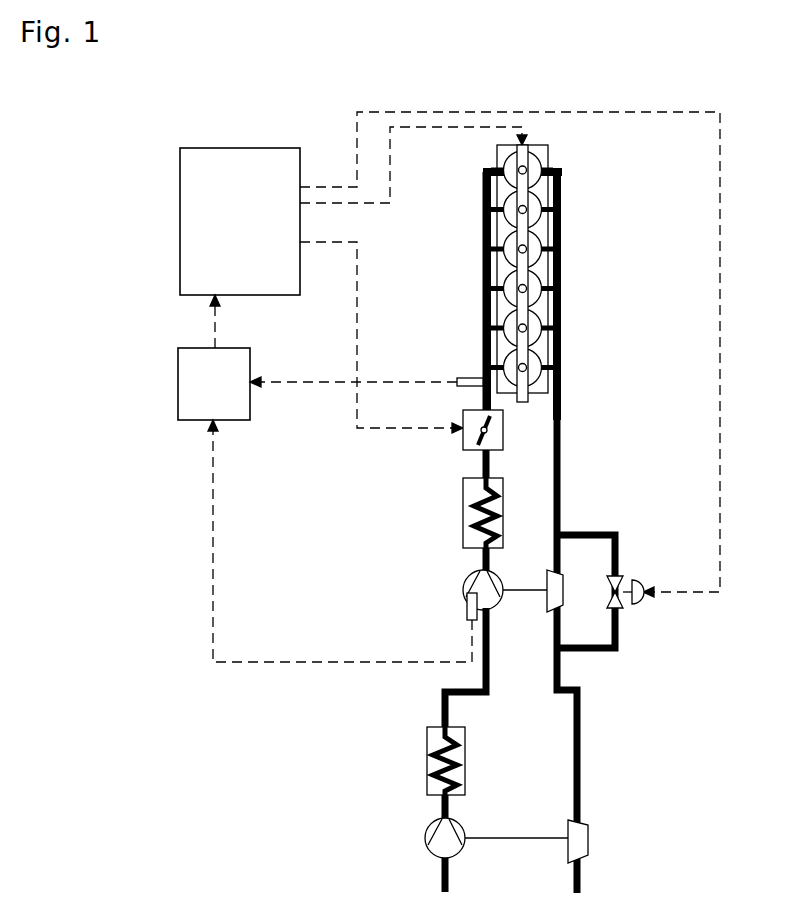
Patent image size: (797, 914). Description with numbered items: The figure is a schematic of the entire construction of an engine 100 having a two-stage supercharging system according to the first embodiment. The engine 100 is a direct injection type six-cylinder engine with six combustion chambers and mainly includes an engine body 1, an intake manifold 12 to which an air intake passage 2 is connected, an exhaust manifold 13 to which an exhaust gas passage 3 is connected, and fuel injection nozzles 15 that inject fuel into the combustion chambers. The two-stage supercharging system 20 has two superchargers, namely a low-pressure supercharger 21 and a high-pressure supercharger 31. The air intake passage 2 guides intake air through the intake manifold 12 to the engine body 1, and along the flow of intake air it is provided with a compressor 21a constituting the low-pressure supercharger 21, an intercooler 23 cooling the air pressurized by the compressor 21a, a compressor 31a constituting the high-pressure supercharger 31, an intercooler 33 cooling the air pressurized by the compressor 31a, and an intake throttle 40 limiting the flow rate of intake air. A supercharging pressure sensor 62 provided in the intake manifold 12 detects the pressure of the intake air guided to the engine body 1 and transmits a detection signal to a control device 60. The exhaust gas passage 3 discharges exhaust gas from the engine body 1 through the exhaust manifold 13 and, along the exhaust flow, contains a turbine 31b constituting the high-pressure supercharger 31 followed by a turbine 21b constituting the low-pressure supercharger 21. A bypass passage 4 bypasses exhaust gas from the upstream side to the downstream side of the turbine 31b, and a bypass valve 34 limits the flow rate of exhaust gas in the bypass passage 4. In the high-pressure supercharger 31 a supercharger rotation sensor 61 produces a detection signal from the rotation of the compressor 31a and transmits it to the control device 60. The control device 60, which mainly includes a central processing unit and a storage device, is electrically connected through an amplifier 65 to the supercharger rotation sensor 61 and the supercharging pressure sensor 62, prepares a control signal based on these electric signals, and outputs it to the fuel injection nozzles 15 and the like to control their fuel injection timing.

The engine 100 is at (741, 39).
The engine body 1 is at (522, 279).
The intake manifold 12 is at (468, 270).
The exhaust manifold 13 is at (572, 271).
The fuel injection nozzles 15 is at (528, 168).
The air intake passage 2 is at (468, 396).
The exhaust gas passage 3 is at (565, 398).
The bypass passage 4 is at (621, 551).
The bypass valve 34 is at (645, 604).
The intake throttle 40 is at (463, 441).
The intercooler 33 is at (463, 514).
The high-pressure supercharger 31 is at (492, 606).
The compressor 31a is at (463, 592).
The turbine 31b is at (565, 610).
The supercharger rotation sensor 61 is at (467, 622).
The supercharging pressure sensor 62 is at (467, 377).
The control device 60 is at (228, 239).
The amplifier 65 is at (205, 400).
The two-stage supercharging system 20 is at (531, 750).
The low-pressure supercharger 21 is at (475, 841).
The compressor 21a is at (425, 840).
The turbine 21b is at (590, 842).
The intercooler 23 is at (427, 760).